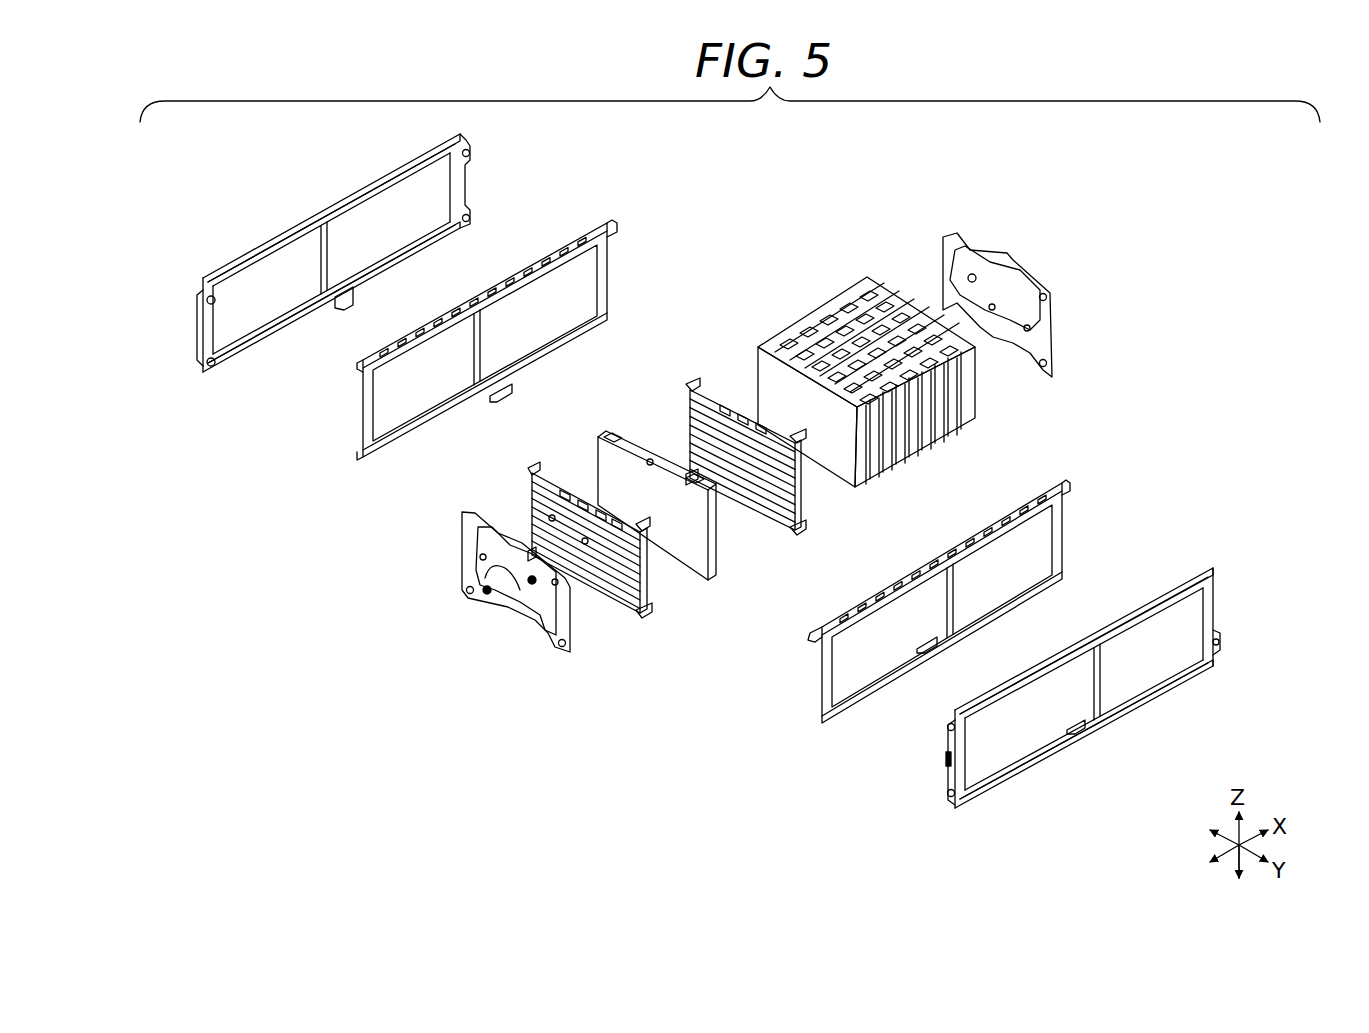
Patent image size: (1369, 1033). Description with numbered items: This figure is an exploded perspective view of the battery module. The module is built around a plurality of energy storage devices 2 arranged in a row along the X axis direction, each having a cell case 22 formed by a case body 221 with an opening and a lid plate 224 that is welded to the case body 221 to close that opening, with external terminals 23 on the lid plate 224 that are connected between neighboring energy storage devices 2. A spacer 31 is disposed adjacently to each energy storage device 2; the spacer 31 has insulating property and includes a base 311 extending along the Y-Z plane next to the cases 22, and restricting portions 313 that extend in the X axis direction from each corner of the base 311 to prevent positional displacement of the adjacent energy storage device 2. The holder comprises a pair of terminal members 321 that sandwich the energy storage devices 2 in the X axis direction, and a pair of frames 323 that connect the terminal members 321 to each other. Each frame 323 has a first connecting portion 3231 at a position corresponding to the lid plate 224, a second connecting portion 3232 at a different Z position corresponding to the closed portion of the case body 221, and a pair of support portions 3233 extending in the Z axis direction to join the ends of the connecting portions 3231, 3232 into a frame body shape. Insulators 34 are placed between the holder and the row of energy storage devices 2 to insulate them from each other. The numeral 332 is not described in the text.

The energy storage device 2 is at (704, 472).
The cell case 22 is at (710, 521).
The case body 221 is at (716, 557).
The lid plate 224 is at (714, 545).
The external terminal 23 is at (612, 440).
The spacer 31 is at (677, 481).
The base 311 is at (687, 392).
The restricting portion 313 is at (688, 384).
The terminal member 321 is at (737, 454).
The frame 323 is at (711, 462).
The first connecting portion 3231 is at (383, 173).
The second connecting portion 3232 is at (417, 255).
The support portion 3233 is at (463, 170).
The reinforcing portion 332 is at (535, 605).
The insulator 34 is at (614, 213).